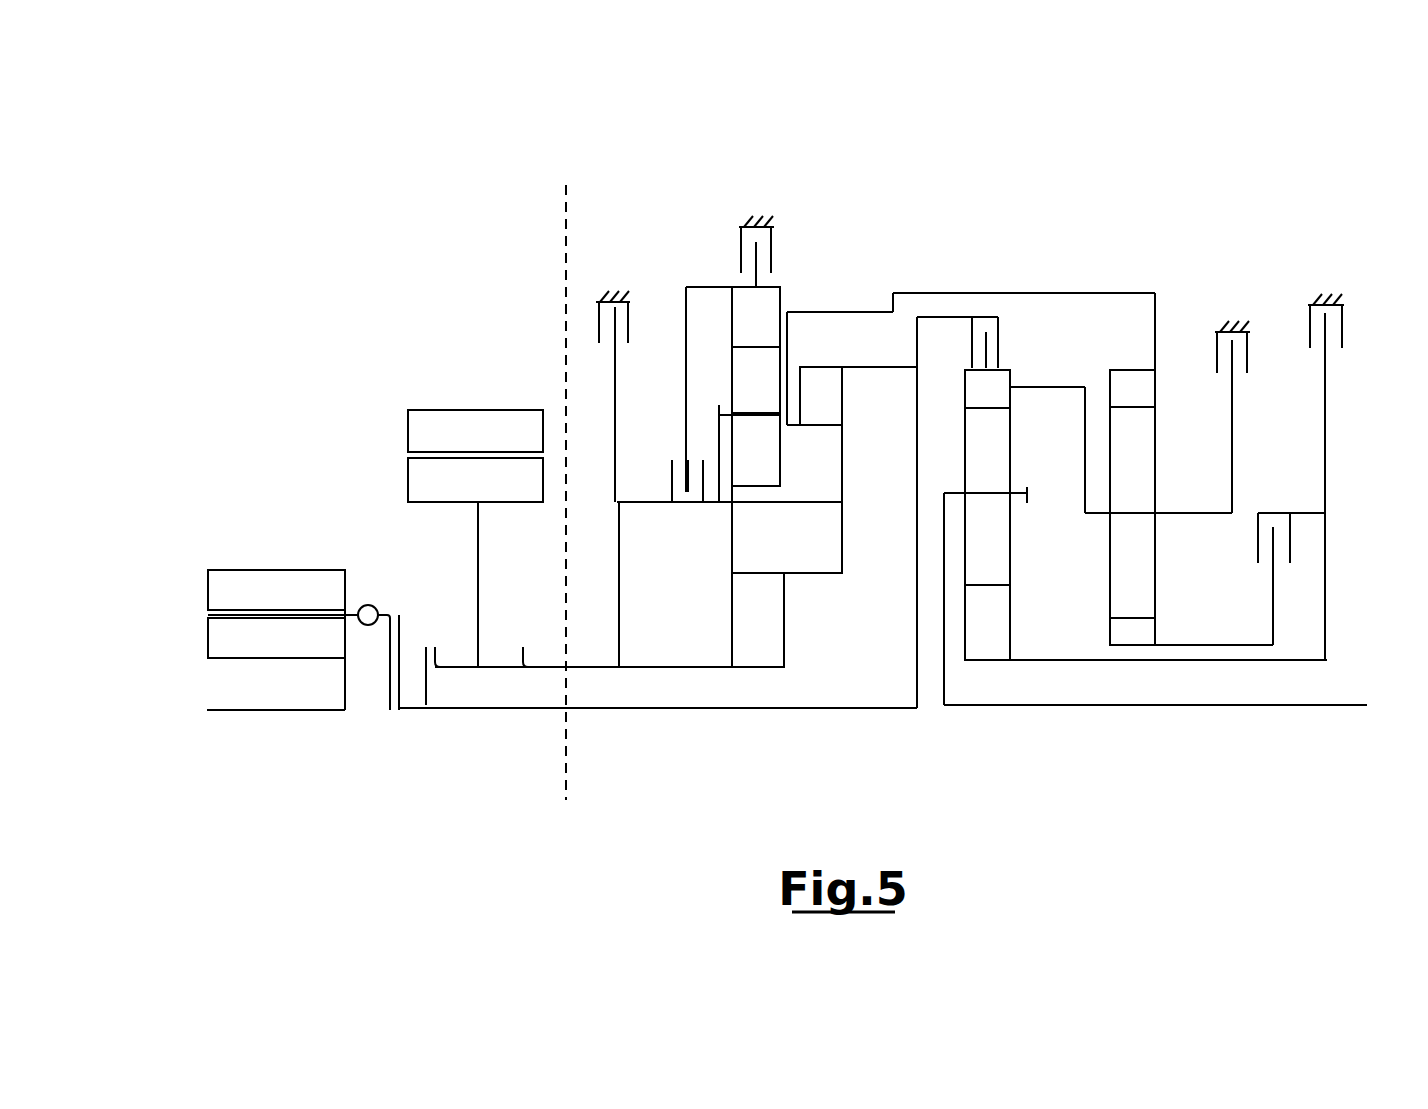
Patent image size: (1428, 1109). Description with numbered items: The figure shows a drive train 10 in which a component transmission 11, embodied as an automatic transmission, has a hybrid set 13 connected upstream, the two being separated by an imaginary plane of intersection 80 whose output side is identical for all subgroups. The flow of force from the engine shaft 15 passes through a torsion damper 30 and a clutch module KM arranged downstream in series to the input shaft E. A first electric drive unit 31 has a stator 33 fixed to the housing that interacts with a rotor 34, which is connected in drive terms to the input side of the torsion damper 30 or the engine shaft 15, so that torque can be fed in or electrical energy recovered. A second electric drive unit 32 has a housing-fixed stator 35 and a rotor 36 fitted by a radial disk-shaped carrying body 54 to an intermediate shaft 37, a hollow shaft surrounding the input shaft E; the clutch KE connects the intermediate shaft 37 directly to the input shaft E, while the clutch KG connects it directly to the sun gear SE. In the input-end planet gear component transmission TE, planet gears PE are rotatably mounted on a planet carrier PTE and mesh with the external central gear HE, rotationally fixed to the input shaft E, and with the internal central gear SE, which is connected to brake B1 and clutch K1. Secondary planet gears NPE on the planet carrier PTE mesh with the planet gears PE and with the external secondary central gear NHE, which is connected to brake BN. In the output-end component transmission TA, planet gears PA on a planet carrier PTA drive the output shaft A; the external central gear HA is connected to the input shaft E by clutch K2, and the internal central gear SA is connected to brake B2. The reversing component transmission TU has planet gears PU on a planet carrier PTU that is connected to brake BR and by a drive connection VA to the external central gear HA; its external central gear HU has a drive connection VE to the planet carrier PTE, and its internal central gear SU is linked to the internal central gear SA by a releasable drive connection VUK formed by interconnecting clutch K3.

The drive train 10 is at (848, 218).
The component transmission 11 is at (1092, 218).
The hybrid set 13 is at (307, 453).
The engine shaft 15 is at (280, 710).
The torsion damper 30 is at (368, 604).
The first electric drive unit 31 is at (200, 593).
The second electric drive unit 32 is at (493, 405).
The stator 33 is at (265, 587).
The rotor 34 is at (223, 640).
The stator 35 is at (445, 432).
The rotor 36 is at (420, 483).
The intermediate shaft 37 is at (465, 667).
The radial disk-shaped carrying body 54 is at (480, 577).
The plane of intersection 80 is at (563, 215).
The output shaft A is at (1301, 700).
The brake B1 is at (616, 294).
The brake B2 is at (1329, 300).
The brake BN is at (760, 225).
The brake BR is at (1238, 326).
The input shaft E is at (648, 712).
The external central gear HA is at (978, 388).
The external central gear HE is at (828, 416).
The external central gear HU is at (1133, 383).
The clutch K1 is at (663, 481).
The clutch K2 is at (1008, 342).
The clutch K3 is at (1291, 523).
The clutch KE is at (430, 657).
The clutch KG is at (523, 657).
The clutch module KM is at (397, 712).
The external secondary central gear NHE is at (762, 305).
The secondary planet gears NPE is at (770, 466).
The planet gears PA is at (992, 470).
The planet gears PE is at (766, 553).
The planet carrier PTA is at (1029, 509).
The planet carrier PTE is at (716, 504).
The planet carrier PTU is at (1192, 518).
The planet gears PU is at (1143, 493).
The internal central gear SA is at (997, 648).
The internal central gear SE is at (752, 598).
The internal central gear SU is at (1147, 643).
The output-end planet gear component transmission TA is at (1009, 669).
The input-end planet gear component transmission TE is at (722, 679).
The planet gear reversing component transmission TU is at (1148, 663).
The drive connection VA is at (1054, 384).
The drive connection VE is at (914, 292).
The drive connection VUK is at (1283, 593).